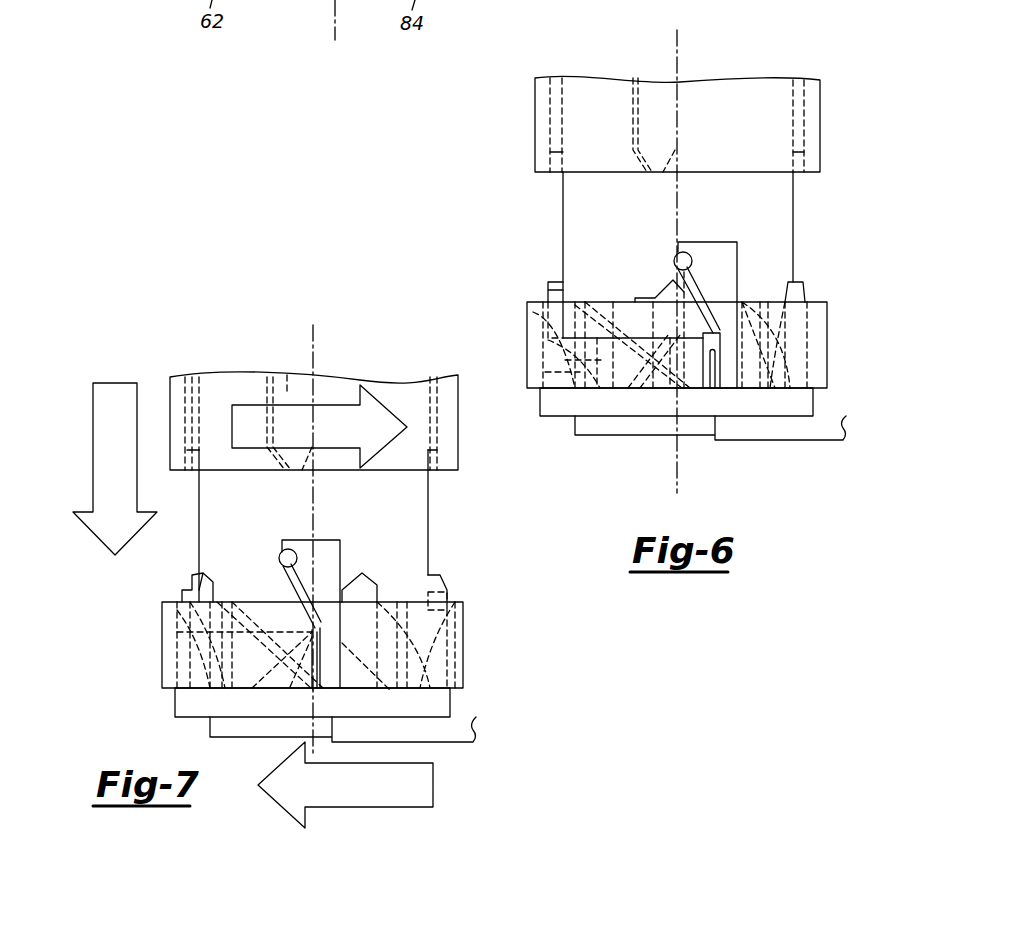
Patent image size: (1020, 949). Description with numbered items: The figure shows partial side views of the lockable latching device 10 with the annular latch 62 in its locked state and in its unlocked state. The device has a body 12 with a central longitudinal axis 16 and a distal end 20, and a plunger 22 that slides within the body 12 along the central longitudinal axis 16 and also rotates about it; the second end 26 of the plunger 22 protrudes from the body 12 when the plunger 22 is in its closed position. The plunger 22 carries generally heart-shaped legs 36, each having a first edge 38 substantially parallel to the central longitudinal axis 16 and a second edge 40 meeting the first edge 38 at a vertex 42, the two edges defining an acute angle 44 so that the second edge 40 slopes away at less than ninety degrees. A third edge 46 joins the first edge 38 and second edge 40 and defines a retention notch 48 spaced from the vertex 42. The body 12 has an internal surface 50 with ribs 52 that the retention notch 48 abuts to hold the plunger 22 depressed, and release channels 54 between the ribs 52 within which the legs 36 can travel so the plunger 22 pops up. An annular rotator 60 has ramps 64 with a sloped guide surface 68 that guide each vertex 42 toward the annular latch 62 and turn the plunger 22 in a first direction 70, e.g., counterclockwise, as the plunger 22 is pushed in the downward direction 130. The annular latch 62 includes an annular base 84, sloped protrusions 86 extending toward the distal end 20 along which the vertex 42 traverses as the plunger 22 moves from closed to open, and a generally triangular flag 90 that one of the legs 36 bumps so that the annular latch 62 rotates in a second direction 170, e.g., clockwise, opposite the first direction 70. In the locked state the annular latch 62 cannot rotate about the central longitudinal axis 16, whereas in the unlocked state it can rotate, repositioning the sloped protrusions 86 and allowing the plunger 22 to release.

In FIG. 6, the lockable latching device 10 is at (572, 45).
In FIG. 7, the lockable latching device 10 is at (203, 342).
In FIG. 6, the body 12 is at (535, 108).
In FIG. 7, the body 12 is at (172, 380).
In FIG. 6, the central longitudinal axis 16 is at (677, 52).
In FIG. 7, the central longitudinal axis 16 is at (313, 348).
In FIG. 6, the distal end 20 is at (833, 177).
In FIG. 7, the distal end 20 is at (476, 470).
In FIG. 6, the plunger 22 is at (563, 222).
In FIG. 7, the plunger 22 is at (313, 526).
In FIG. 6, the second end 26 is at (835, 362).
In FIG. 7, the second end 26 is at (518, 647).
In FIG. 6, the legs 36 is at (672, 292).
In FIG. 7, the legs 36 is at (178, 618).
In FIG. 6, the first edge 38 is at (548, 314).
In FIG. 7, the first edge 38 is at (178, 645).
In FIG. 6, the second edge 40 is at (828, 325).
In FIG. 7, the second edge 40 is at (448, 596).
In FIG. 6, the vertex 42 is at (684, 395).
In FIG. 7, the vertex 42 is at (380, 690).
In FIG. 6, the acute angle 44 is at (690, 360).
In FIG. 7, the acute angle 44 is at (314, 659).
In FIG. 6, the third edge 46 is at (640, 318).
In FIG. 6, the retention notch 48 is at (652, 293).
In FIG. 7, the retention notch 48 is at (358, 577).
In FIG. 6, the internal surface 50 is at (813, 96).
In FIG. 7, the internal surface 50 is at (175, 406).
In FIG. 7, the ribs 52 is at (287, 378).
In FIG. 6, the release channels 54 is at (751, 103).
In FIG. 7, the release channels 54 is at (408, 398).
In FIG. 7, the annular rotator 60 is at (463, 626).
In FIG. 6, the annular latch 62 is at (813, 403).
In FIG. 7, the annular latch 62 is at (175, 705).
In FIG. 6, the ramps 64 is at (552, 356).
In FIG. 7, the ramps 64 is at (228, 690).
In FIG. 6, the sloped guide surface 68 is at (604, 390).
In FIG. 7, the sloped guide surface 68 is at (245, 630).
In FIG. 7, the first direction 70 is at (255, 415).
In FIG. 6, the annular base 84 is at (642, 416).
In FIG. 7, the annular base 84 is at (192, 717).
In FIG. 6, the sloped protrusions 86 is at (548, 374).
In FIG. 7, the sloped protrusions 86 is at (178, 664).
In FIG. 6, the flag 90 is at (716, 252).
In FIG. 7, the flag 90 is at (325, 545).
In FIG. 7, the downward direction 130 is at (121, 383).
In FIG. 7, the second direction 170 is at (418, 790).